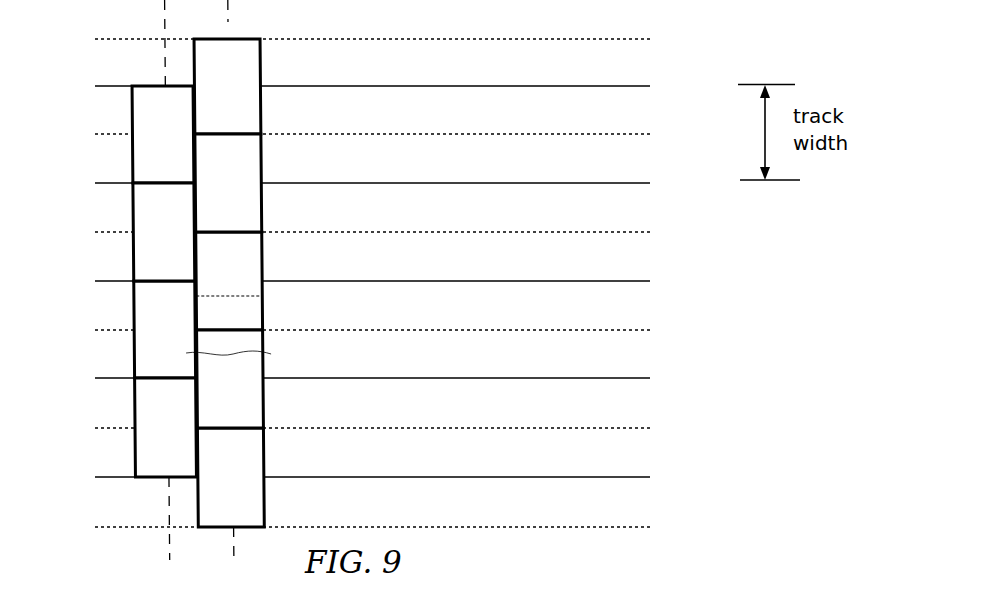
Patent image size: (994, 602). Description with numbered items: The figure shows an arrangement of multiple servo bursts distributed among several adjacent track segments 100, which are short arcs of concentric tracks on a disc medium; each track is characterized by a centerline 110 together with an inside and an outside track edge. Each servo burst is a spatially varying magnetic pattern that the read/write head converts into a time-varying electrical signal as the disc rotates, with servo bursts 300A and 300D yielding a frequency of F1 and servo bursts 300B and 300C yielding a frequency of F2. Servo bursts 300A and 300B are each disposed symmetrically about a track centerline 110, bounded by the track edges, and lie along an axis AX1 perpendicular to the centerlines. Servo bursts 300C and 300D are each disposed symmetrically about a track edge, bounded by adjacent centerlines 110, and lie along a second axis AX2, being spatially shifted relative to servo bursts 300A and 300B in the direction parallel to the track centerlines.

The track segment 100 is at (674, 90).
The centerline 110 is at (487, 132).
The servo burst 300A is at (141, 132).
The servo burst 300B is at (141, 228).
The servo burst 300C is at (254, 123).
The servo burst 300D is at (255, 218).
The axis AX1 is at (166, 549).
The axis AX2 is at (276, 281).